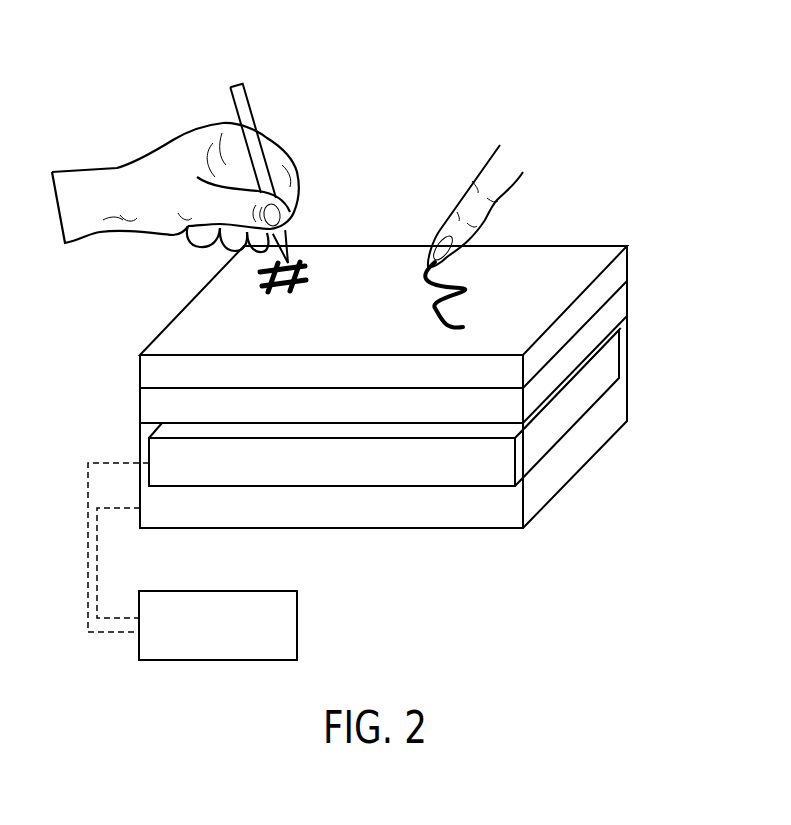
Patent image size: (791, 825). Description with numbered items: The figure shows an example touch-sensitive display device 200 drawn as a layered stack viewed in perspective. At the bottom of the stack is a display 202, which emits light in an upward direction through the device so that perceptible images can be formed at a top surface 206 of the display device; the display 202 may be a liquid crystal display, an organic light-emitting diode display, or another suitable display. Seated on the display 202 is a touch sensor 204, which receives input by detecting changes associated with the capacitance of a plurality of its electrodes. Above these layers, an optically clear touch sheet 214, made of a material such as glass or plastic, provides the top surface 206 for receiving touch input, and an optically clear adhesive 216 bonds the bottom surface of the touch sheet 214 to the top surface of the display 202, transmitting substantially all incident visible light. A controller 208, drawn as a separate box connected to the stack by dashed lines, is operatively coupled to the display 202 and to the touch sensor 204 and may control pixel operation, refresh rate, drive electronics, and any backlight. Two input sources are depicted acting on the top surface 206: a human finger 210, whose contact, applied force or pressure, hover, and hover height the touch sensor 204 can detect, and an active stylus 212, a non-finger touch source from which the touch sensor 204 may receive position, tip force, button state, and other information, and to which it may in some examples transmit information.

The touch-sensitive display device 200 is at (393, 72).
The display 202 is at (388, 518).
The touch sensor 204 is at (425, 471).
The top surface 206 is at (593, 258).
The controller 208 is at (233, 648).
The human finger 210 is at (489, 160).
The active stylus 212 is at (249, 103).
The optically clear touch sheet 214 is at (417, 382).
The optically clear adhesive (OCA) 216 is at (382, 418).